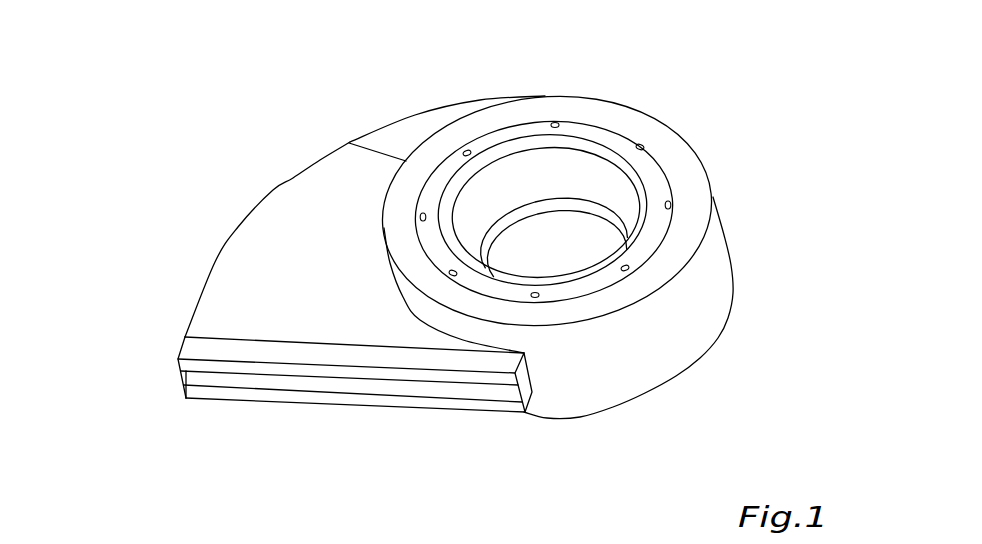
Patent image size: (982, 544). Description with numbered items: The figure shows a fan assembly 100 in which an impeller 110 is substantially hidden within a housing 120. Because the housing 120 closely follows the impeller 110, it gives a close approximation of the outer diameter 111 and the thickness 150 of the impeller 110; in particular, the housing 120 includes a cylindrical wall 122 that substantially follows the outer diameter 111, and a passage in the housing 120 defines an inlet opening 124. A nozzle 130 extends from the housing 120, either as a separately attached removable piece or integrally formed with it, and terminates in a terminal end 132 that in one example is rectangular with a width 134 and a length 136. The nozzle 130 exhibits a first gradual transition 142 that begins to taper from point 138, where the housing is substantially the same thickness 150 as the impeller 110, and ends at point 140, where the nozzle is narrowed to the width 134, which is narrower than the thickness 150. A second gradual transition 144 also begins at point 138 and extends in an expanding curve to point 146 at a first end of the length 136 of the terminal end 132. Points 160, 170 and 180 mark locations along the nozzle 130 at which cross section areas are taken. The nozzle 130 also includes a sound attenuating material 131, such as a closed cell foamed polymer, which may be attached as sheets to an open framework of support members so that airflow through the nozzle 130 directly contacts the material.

The fan assembly 100 is at (653, 421).
The impeller 110 is at (592, 225).
The outer diameter 111 is at (537, 237).
The housing 120 is at (672, 143).
The cylindrical wall 122 is at (698, 318).
The inlet opening 124 is at (443, 107).
The nozzle 130 is at (301, 186).
The sound attenuating material 131 is at (214, 261).
The terminal end 132 is at (240, 403).
The width 134 is at (180, 398).
The length 136 is at (186, 403).
The point 138 is at (556, 107).
The point 140 is at (523, 353).
The first gradual transition 142 is at (238, 226).
The second gradual transition 144 is at (273, 188).
The point 146 is at (183, 347).
The thickness 150 is at (715, 175).
The point 160 is at (377, 123).
The point 170 is at (293, 175).
The point 180 is at (184, 337).